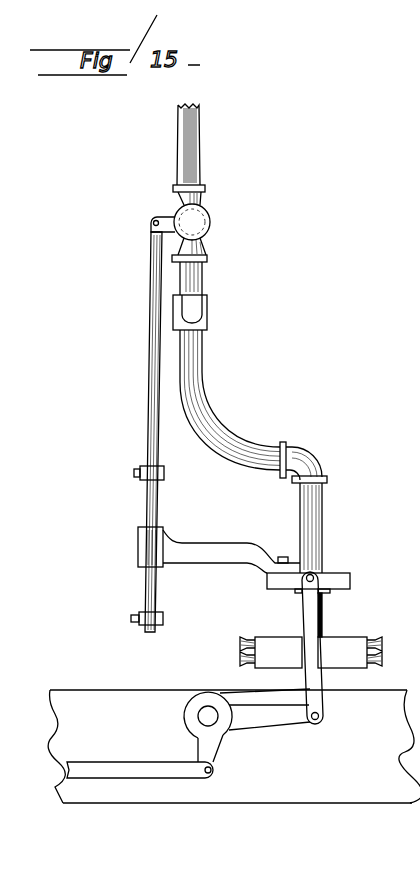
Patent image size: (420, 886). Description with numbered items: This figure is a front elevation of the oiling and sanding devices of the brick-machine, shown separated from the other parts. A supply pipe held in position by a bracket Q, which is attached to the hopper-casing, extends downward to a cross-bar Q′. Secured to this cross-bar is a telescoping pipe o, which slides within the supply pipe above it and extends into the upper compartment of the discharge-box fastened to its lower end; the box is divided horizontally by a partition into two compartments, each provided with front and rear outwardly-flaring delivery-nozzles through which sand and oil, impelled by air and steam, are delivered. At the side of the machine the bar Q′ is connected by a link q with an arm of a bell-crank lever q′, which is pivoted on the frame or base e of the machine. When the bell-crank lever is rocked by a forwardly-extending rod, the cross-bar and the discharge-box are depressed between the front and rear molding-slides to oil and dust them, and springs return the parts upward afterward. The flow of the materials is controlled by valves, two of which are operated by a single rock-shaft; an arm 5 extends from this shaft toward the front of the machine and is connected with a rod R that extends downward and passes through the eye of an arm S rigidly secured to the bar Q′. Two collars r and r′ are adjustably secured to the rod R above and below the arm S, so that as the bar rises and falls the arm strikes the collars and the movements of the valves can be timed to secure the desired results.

The arm 5 is at (165, 216).
The bracket Q is at (208, 318).
The rod R is at (149, 354).
The collar r is at (134, 472).
The collar r′ is at (137, 618).
The arm S is at (231, 541).
The cross-bar Q′ is at (351, 578).
The pipe o is at (323, 620).
The link q is at (298, 611).
The base e is at (234, 746).
The bell-crank lever q′ is at (272, 722).